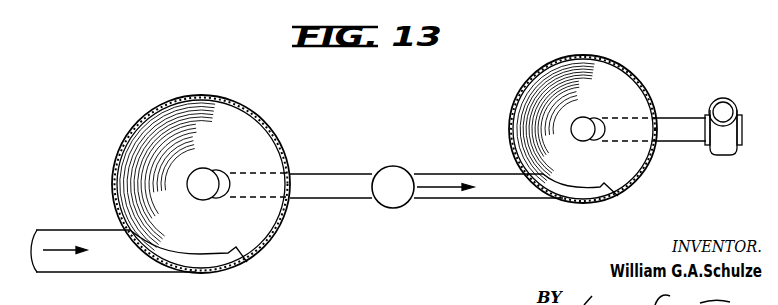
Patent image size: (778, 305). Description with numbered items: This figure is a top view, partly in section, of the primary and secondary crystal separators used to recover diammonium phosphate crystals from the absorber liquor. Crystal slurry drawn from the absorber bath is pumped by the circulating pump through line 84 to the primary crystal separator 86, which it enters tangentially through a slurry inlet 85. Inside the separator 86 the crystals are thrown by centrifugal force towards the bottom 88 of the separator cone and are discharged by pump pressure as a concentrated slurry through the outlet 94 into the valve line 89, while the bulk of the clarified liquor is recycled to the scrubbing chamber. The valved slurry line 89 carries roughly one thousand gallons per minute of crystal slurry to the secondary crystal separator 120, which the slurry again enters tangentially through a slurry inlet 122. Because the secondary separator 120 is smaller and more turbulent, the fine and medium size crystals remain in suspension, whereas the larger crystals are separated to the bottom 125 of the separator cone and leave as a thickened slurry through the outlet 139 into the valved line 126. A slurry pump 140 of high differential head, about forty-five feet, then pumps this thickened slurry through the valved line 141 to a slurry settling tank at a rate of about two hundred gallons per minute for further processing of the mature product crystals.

The line 84 is at (78, 273).
The slurry inlet 85 is at (235, 247).
The crystal separator 86 is at (122, 154).
The bottom of the separator cone 88 is at (207, 168).
The valve line 89 is at (333, 198).
The outlet 94 is at (219, 196).
The secondary crystal separator 120 is at (526, 91).
The slurry inlet 122 is at (605, 166).
The bottom of the separator cone 125 is at (572, 128).
The valved line 126 is at (658, 142).
The outlet 139 is at (594, 118).
The slurry pump 140 is at (714, 156).
The valved line 141 is at (723, 98).